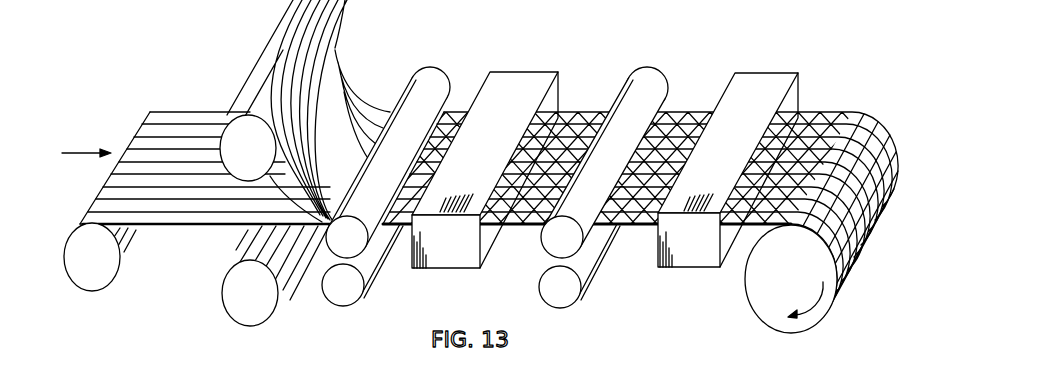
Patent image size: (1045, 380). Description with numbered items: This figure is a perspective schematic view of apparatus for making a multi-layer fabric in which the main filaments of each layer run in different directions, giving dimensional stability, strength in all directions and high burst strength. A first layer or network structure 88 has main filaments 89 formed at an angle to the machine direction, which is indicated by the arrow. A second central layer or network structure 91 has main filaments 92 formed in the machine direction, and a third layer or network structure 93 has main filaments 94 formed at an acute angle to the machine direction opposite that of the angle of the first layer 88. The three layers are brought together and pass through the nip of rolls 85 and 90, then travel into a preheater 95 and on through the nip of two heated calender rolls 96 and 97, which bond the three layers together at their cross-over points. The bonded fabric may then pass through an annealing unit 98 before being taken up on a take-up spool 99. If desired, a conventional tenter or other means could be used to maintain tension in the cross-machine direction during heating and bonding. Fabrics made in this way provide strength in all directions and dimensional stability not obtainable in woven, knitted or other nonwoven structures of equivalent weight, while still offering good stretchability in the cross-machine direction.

The roll 85 is at (438, 80).
The first layer or network structure 88 is at (346, 65).
The main filaments 89 is at (365, 107).
The roll 90 is at (351, 292).
The second central layer or network structure 91 is at (201, 107).
The main filaments 92 is at (153, 122).
The third layer or network structure 93 is at (296, 237).
The main filaments 94 is at (240, 245).
The preheater 95 is at (523, 78).
The heated calender roll 96 is at (653, 75).
The heated calender roll 97 is at (568, 290).
The annealing unit 98 is at (760, 82).
The take-up spool 99 is at (768, 302).